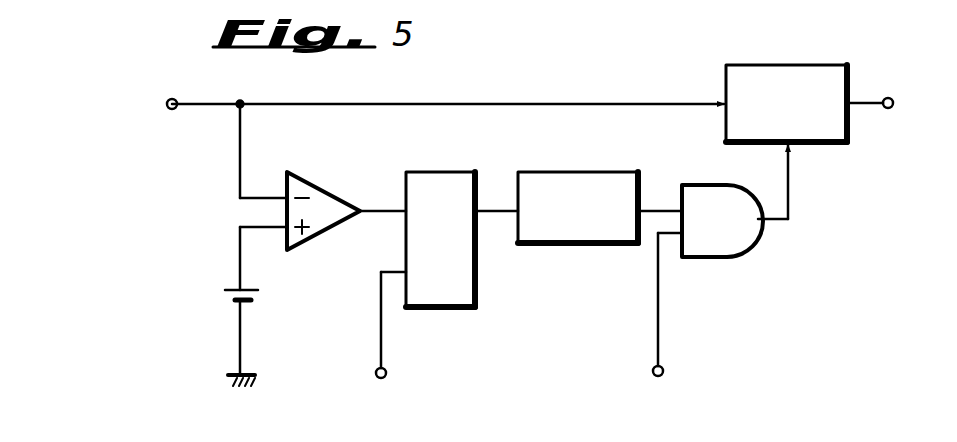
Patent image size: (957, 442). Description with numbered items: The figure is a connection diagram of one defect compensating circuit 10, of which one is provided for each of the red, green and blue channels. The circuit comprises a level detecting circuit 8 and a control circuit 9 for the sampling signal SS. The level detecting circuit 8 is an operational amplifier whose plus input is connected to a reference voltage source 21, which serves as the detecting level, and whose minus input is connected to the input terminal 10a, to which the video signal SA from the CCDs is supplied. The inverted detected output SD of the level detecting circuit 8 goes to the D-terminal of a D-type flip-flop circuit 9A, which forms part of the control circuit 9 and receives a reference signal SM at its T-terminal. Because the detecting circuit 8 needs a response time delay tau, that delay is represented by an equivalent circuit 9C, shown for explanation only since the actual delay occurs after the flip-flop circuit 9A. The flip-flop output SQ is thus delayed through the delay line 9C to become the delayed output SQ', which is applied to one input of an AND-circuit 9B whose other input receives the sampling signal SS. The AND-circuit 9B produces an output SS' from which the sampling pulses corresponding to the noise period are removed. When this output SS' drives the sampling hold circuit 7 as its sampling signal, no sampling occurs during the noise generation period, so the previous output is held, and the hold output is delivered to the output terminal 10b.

The sampling hold circuit 7 is at (803, 64).
The level detecting circuit 8 is at (337, 237).
The control circuit 9 is at (533, 153).
The D-type flip-flop circuit 9A is at (460, 171).
The AND-circuit 9B is at (740, 255).
The equivalent circuit (delay line) 9C is at (626, 172).
The defect compensating circuit 10 is at (530, 93).
The input terminal 10a is at (173, 110).
The output terminal 10b is at (888, 109).
The reference voltage source 21 is at (235, 295).
The video signal SA is at (263, 110).
The detected output (inverted) SD is at (386, 146).
The flip-flop output SQ is at (496, 246).
The delayed output SQ' is at (666, 181).
The reference signal SM is at (381, 338).
The sampling signal SS is at (682, 304).
The gated sampling signal (AND-circuit output) SS' is at (799, 182).